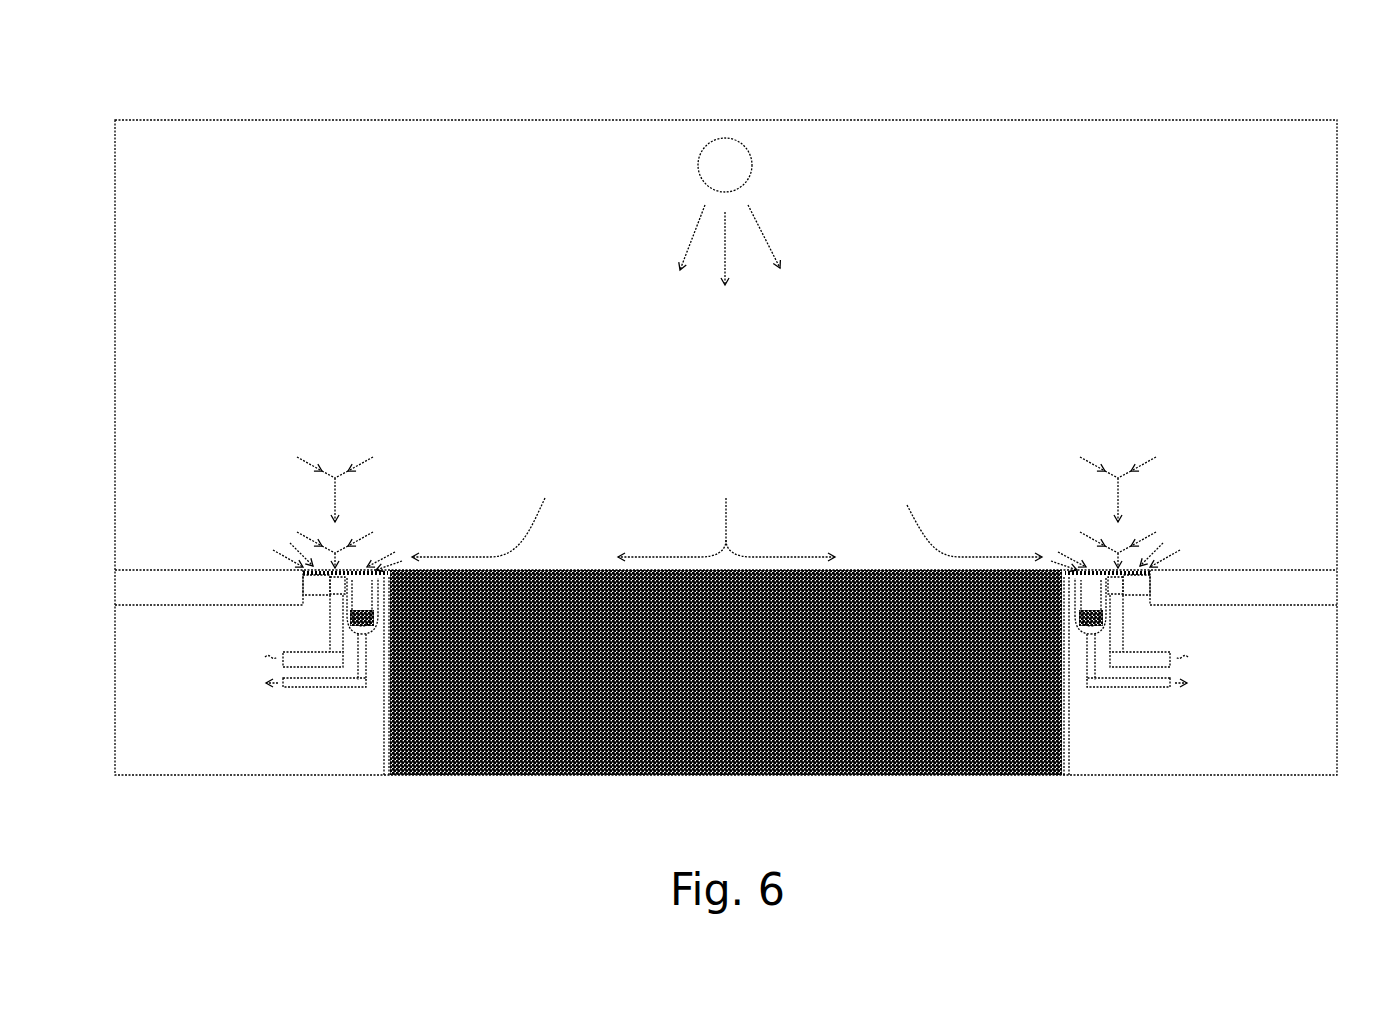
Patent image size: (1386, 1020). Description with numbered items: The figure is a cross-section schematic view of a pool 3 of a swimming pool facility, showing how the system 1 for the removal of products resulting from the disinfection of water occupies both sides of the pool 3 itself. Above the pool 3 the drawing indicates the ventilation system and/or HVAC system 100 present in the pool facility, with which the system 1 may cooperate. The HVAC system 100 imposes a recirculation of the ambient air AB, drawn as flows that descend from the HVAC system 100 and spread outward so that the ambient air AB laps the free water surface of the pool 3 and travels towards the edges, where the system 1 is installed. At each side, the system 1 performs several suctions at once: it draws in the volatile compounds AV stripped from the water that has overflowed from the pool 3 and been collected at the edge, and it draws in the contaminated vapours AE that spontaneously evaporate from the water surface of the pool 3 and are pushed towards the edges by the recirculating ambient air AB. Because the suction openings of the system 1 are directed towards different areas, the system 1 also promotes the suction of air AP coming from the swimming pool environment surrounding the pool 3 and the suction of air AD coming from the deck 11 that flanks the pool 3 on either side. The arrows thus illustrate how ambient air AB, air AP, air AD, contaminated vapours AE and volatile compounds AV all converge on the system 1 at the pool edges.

The HVAC system 100 is at (756, 152).
The system for the removal of products resulting from the disinfection of water 1 is at (928, 152).
The pool 3 is at (723, 690).
The deck 11 is at (237, 599).
The ambient air AB is at (765, 238).
The air coming from the swimming pool environment AP is at (1093, 458).
The contaminated vapours AE is at (1070, 552).
The air coming from the deck AD is at (1177, 548).
The volatile compounds AV is at (1085, 604).